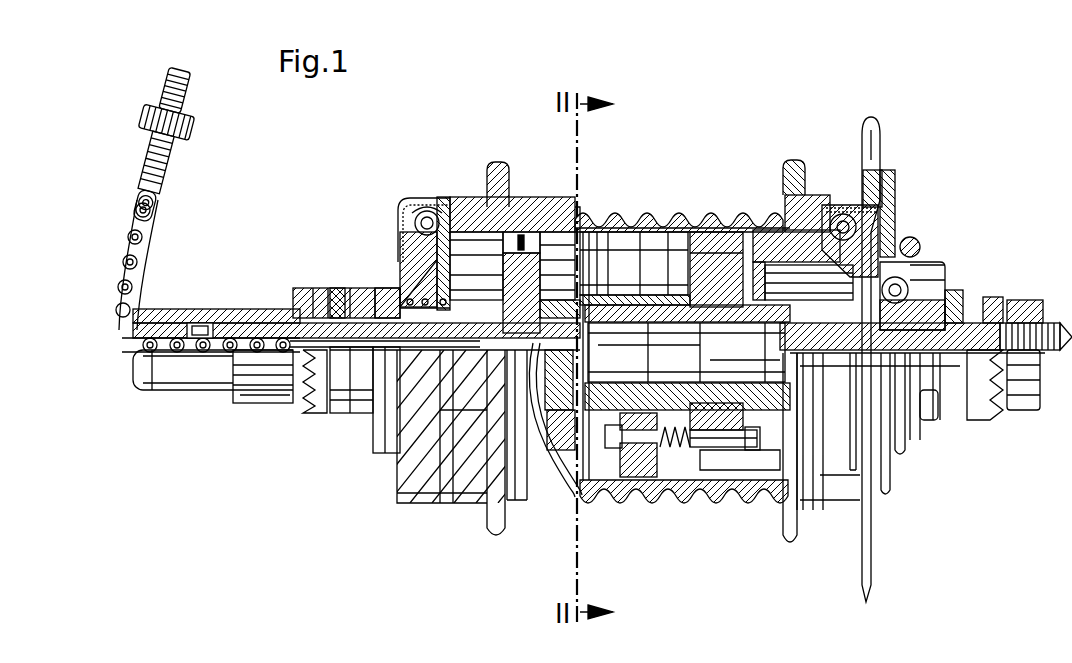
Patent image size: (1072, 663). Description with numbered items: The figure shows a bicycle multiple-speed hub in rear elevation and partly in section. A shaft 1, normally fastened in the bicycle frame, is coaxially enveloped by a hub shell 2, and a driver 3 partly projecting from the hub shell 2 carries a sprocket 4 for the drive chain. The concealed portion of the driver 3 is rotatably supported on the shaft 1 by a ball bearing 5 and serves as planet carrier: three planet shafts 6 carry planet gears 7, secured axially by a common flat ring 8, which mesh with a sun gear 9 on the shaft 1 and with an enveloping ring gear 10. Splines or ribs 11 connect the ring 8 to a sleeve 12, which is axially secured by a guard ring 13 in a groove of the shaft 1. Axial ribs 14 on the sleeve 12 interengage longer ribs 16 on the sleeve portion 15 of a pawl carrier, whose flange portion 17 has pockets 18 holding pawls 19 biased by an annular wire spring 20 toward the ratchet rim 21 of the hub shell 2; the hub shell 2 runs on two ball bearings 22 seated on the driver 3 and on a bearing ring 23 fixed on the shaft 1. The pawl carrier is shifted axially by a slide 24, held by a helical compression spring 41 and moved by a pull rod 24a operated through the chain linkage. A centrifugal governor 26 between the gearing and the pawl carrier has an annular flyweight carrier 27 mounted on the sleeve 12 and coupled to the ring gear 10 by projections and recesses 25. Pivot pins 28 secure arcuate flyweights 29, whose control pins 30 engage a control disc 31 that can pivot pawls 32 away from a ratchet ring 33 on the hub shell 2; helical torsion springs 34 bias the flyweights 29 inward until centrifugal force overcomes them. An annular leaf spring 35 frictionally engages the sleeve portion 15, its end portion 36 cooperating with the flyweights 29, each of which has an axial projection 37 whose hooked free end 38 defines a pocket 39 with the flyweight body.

The shaft 1 is at (947, 350).
The hub shell 2 is at (430, 192).
The driver 3 is at (860, 247).
The sprocket 4 is at (883, 170).
The ball bearing 5 is at (937, 267).
The planet shaft 6 is at (907, 238).
The planet gear 7 is at (822, 210).
The flat ring 8 is at (780, 230).
The sun gear 9 is at (822, 352).
The ring gear 10 is at (807, 203).
The splines or ribs 11 is at (822, 425).
The sleeve 12 is at (668, 280).
The guard ring 13 is at (480, 507).
The axial ribs 14 is at (620, 280).
The sleeve portion of pawl carrier 15 is at (420, 463).
The ribs 16 is at (430, 507).
The flange portion of pawl carrier 17 is at (353, 420).
The pockets 18 is at (540, 220).
The pawls 19 is at (485, 200).
The annular wire spring 20 is at (525, 230).
The ratchet rim 21 is at (452, 207).
The ball bearings 22 is at (398, 217).
The bearing ring 23 is at (400, 245).
The slide 24 is at (387, 457).
The pull rod 24a is at (293, 403).
The projections and recesses 25 is at (753, 230).
The centrifugal governor 26 is at (684, 506).
The flyweight carrier 27 is at (790, 352).
The pivot pins 28 is at (723, 437).
The flyweights 29 is at (643, 253).
The control pins 30 is at (680, 470).
The control disc 31 is at (687, 443).
The pawls 32 is at (677, 250).
The ratchet ring 33 is at (698, 227).
The helical torsion springs 34 is at (667, 443).
The annular leaf spring 35 is at (578, 207).
The end portion of leaf spring 36 is at (602, 225).
The axial projection 37 is at (593, 457).
The free end of projection 38 is at (537, 460).
The pocket 39 is at (532, 470).
The helical compression spring 41 is at (412, 293).